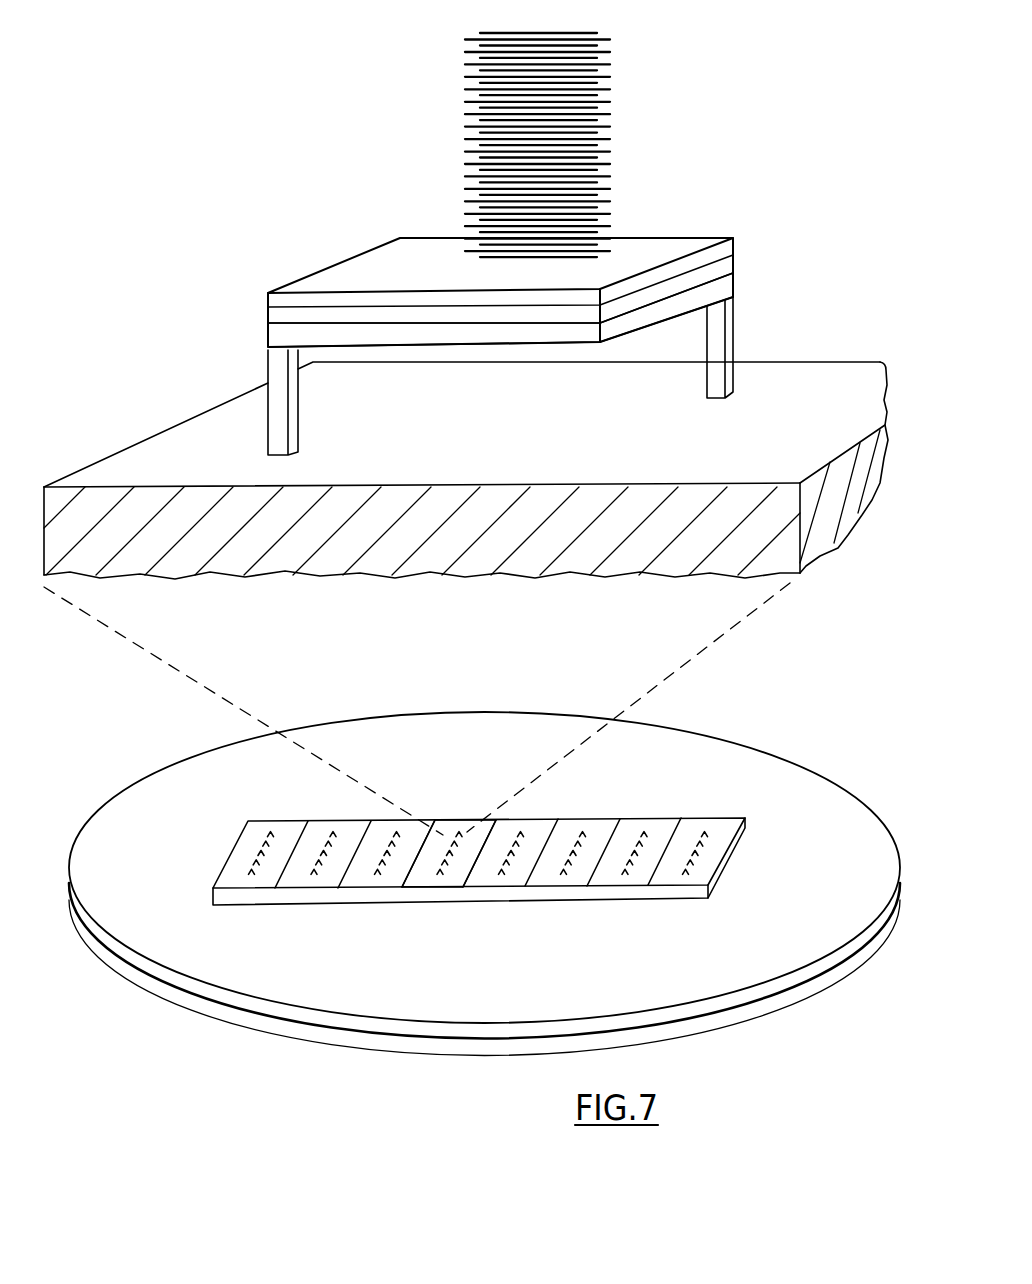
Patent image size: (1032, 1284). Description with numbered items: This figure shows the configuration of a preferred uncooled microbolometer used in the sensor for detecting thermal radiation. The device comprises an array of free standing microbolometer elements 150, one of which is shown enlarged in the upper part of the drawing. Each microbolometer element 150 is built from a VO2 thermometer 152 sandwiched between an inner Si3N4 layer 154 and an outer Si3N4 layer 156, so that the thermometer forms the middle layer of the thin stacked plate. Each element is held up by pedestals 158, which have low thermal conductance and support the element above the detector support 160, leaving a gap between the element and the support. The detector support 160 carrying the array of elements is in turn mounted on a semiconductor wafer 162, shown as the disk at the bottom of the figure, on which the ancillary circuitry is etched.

The microbolometer element 150 is at (350, 256).
The VO2 thermometer 152 is at (268, 317).
The inner Si3N4 layer 154 is at (270, 338).
The outer Si3N4 layer 156 is at (608, 263).
The pedestal 158 is at (268, 373).
The detector support 160 is at (457, 830).
The semiconductor wafer 162 is at (368, 1040).